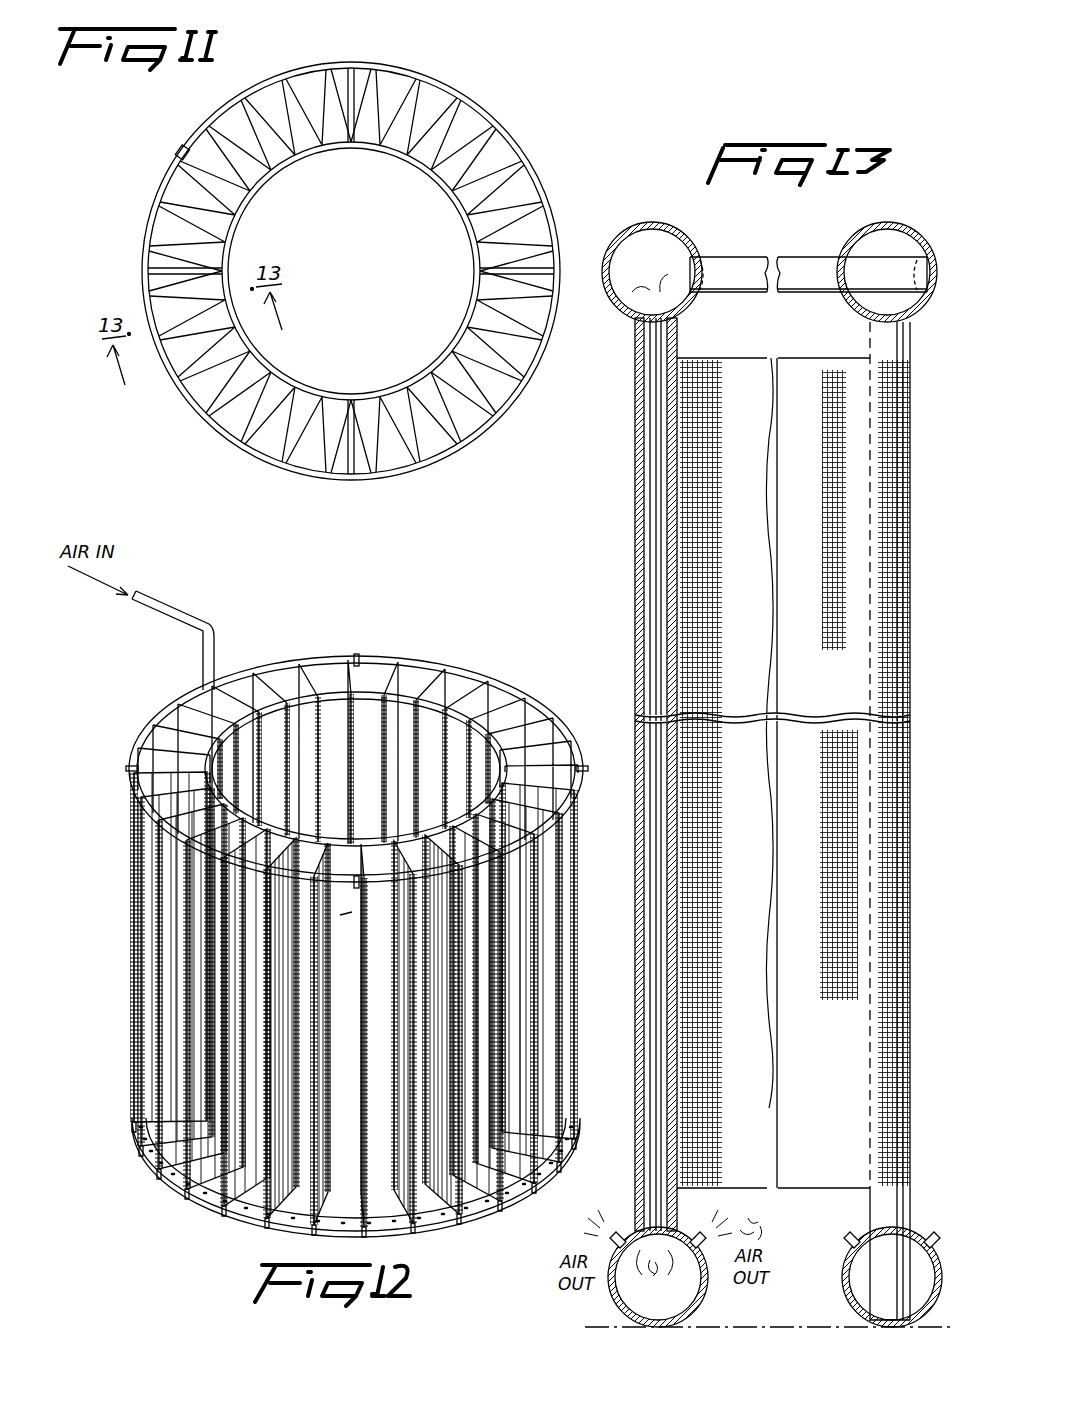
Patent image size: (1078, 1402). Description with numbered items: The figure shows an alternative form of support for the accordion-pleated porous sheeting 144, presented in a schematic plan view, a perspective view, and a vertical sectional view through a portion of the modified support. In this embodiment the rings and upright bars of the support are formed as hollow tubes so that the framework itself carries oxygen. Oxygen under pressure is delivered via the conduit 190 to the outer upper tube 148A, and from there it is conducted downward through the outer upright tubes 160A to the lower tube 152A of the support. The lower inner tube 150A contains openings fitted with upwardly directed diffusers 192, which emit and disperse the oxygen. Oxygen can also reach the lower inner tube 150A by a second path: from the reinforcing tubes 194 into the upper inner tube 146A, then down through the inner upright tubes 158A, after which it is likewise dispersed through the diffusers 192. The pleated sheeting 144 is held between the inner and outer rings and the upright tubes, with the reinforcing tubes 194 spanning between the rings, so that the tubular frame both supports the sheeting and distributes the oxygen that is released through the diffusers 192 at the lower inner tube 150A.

In FIG. 11, the filter panel 144 is at (415, 113).
In FIG. 12, the filter panel 144 is at (553, 905).
In FIG. 13, the filter panel 144 is at (800, 573).
In FIG. 11, the upper inner tube 146A is at (472, 277).
In FIG. 12, the upper inner tube 146A is at (498, 752).
In FIG. 13, the upper inner tube 146A is at (876, 225).
In FIG. 11, the outer upper tube 148A is at (516, 396).
In FIG. 12, the outer upper tube 148A is at (395, 662).
In FIG. 13, the outer upper tube 148A is at (650, 222).
In FIG. 12, the lower inner tube 150A is at (232, 1213).
In FIG. 13, the lower inner tube 150A is at (848, 1303).
In FIG. 12, the lower inner tube 152A is at (168, 1190).
In FIG. 13, the lower inner tube 152A is at (703, 1306).
In FIG. 12, the inner upright tubes 158A is at (345, 916).
In FIG. 13, the inner upright tubes 158A is at (905, 690).
In FIG. 12, the outer upright tubes 160A is at (148, 1153).
In FIG. 13, the outer upright tubes 160A is at (650, 478).
In FIG. 11, the conduit 190 is at (180, 150).
In FIG. 12, the conduit 190 is at (175, 612).
In FIG. 13, the diffusers 192 is at (640, 1237).
In FIG. 11, the reinforcing tubes 194 is at (353, 94).
In FIG. 12, the reinforcing tubes 194 is at (358, 656).
In FIG. 13, the reinforcing tubes 194 is at (790, 255).